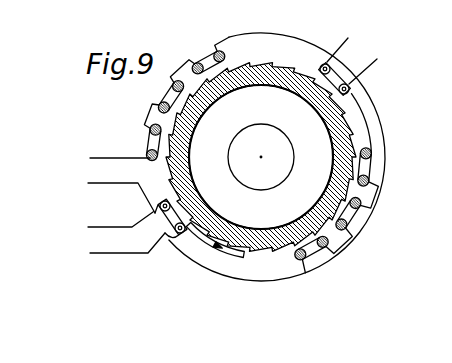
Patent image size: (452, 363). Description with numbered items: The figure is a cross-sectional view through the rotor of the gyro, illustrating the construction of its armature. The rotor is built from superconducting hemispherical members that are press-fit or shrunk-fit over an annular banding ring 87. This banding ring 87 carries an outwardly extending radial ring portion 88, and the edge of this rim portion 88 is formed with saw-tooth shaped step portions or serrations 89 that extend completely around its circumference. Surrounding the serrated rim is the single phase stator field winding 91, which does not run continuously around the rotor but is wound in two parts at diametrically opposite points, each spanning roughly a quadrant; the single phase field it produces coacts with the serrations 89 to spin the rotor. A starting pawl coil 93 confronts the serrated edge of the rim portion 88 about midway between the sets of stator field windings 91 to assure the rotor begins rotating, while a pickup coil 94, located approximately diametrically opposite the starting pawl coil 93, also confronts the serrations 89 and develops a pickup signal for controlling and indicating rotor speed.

The banding ring 87 is at (243, 252).
The radial ring portion 88 is at (200, 104).
The saw-tooth shaped step portions 89 is at (283, 62).
The stator field winding 91 is at (199, 63).
The starting pawl coil 93 is at (357, 86).
The pickup coil 94 is at (170, 243).